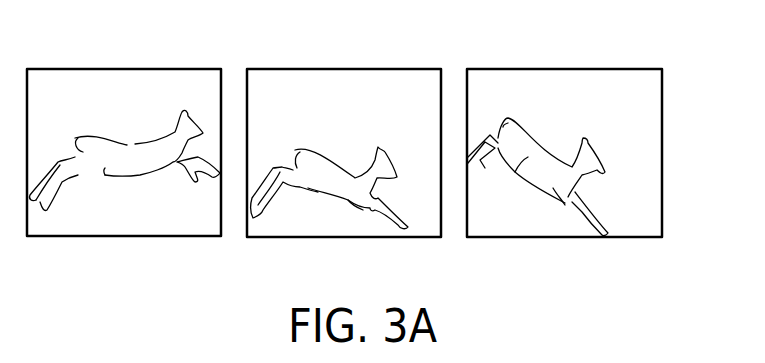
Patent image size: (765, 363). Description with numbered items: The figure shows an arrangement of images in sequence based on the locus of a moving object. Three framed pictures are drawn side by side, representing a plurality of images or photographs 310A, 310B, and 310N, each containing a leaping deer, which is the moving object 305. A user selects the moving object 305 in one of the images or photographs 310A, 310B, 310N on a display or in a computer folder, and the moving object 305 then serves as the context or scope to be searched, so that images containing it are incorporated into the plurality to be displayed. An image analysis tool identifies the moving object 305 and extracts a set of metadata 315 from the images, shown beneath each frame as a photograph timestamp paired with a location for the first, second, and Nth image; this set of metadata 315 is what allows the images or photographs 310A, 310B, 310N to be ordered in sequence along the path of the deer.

The image or photograph 310A is at (123, 69).
The image or photograph 310B is at (342, 69).
The image or photograph 310N is at (566, 69).
The moving object 305 is at (130, 150).
The set of metadata 315 is at (583, 253).